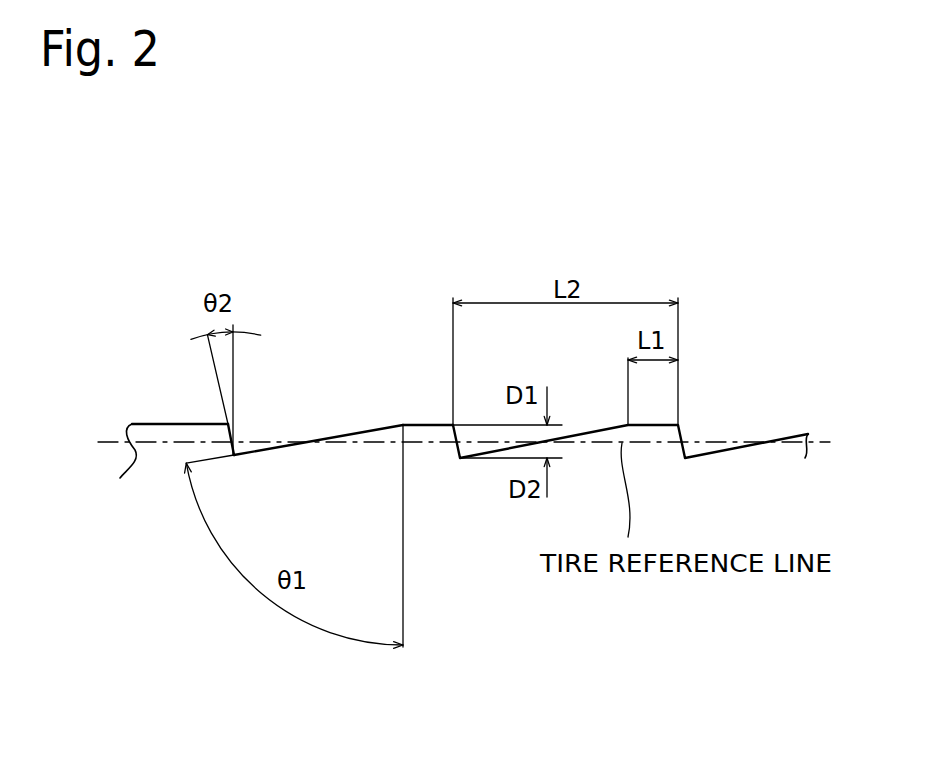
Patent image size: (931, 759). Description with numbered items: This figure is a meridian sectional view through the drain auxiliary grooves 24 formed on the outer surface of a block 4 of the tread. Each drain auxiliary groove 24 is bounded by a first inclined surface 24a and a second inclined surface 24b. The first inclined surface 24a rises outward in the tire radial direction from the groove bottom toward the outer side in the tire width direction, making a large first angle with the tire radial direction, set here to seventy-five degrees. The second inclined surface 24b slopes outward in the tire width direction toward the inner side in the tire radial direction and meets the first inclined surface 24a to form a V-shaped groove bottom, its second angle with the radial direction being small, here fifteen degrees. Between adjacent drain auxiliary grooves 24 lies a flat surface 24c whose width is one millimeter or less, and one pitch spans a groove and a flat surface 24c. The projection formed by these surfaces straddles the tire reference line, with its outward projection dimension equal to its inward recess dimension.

The block 4 is at (162, 423).
The drain auxiliary groove 24 is at (583, 433).
The first inclined surface 24a is at (345, 433).
The second inclined surface 24b is at (236, 432).
The flat surface 24c is at (428, 423).